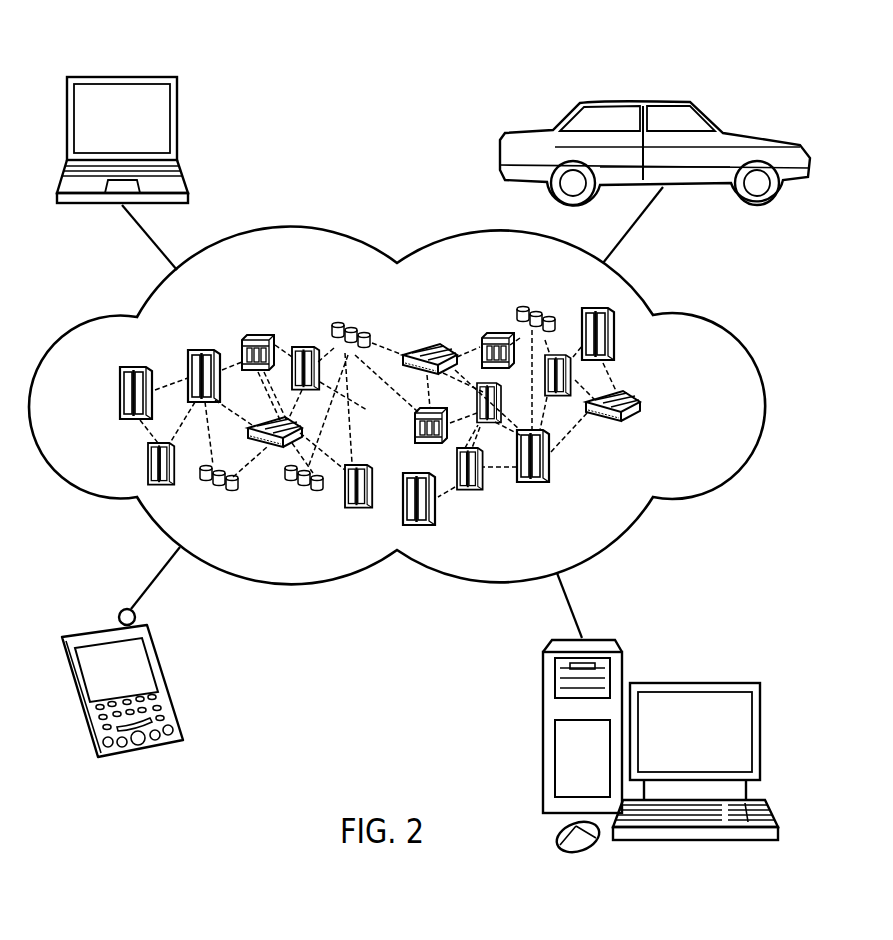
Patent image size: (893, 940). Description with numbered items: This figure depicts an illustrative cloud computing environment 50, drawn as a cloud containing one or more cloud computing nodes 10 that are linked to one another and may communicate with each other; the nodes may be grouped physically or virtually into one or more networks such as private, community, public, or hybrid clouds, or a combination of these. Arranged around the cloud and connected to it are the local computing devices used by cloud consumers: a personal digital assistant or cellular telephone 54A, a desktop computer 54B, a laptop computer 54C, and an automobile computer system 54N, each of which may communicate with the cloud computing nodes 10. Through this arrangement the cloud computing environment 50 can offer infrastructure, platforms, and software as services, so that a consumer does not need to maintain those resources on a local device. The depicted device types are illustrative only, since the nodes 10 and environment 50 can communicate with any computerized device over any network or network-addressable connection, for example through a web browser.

The cloud computing node 10 is at (646, 404).
The cloud computing environment 50 is at (707, 323).
The personal digital assistant or cellular telephone 54A is at (102, 625).
The desktop computer 54B is at (695, 682).
The laptop computer 54C is at (122, 75).
The automobile computer system 54N is at (633, 102).